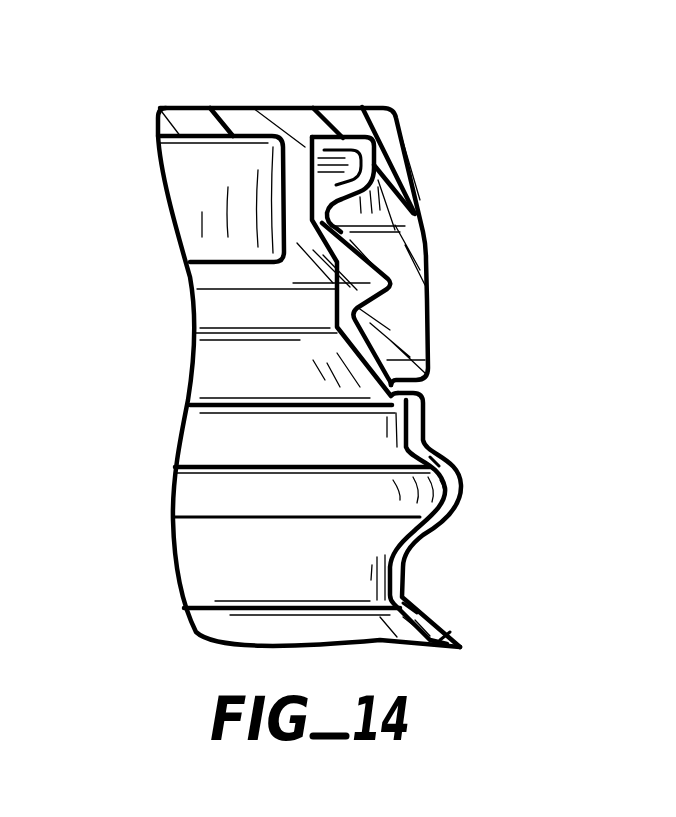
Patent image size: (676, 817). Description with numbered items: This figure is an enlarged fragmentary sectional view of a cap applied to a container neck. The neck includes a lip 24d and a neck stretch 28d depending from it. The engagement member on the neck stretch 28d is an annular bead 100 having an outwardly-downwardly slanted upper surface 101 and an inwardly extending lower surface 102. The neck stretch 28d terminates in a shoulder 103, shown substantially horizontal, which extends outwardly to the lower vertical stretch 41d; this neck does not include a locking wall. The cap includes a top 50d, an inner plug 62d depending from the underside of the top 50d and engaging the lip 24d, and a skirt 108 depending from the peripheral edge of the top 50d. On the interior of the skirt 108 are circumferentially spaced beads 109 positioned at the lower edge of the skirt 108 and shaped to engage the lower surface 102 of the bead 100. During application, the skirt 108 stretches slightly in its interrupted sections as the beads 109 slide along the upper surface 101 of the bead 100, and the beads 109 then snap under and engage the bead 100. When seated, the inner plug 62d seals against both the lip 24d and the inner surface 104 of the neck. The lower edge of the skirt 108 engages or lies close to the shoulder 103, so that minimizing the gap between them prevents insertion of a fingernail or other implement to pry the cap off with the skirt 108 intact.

The top 50d is at (255, 108).
The lip 24d is at (322, 137).
The inner plug 62d is at (300, 160).
The skirt 108 is at (410, 172).
The inner surface 104 is at (312, 194).
The upper surface 101 is at (318, 272).
The neck stretch 28d is at (345, 255).
The annular bead 100 is at (424, 346).
The lower surface 102 is at (352, 325).
The beads 109 is at (395, 352).
The shoulder 103 is at (397, 406).
The lower vertical stretch 41d is at (404, 567).